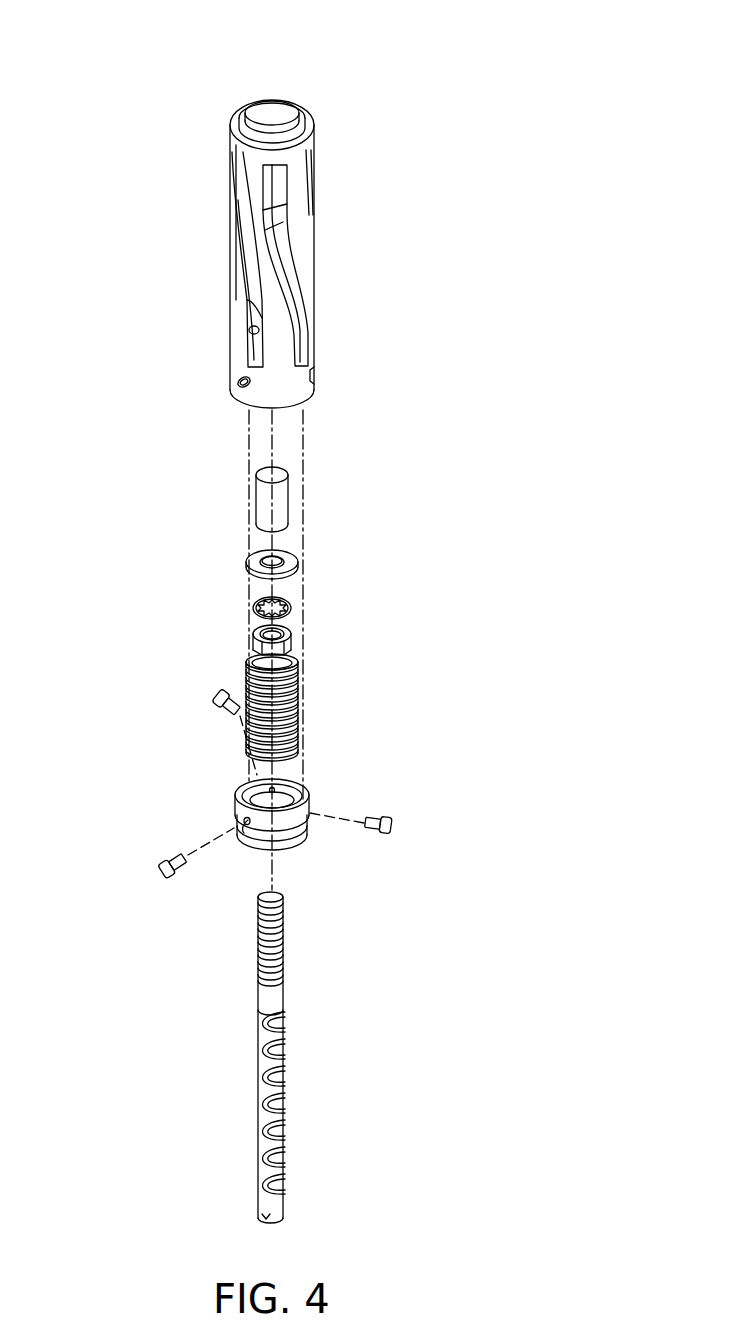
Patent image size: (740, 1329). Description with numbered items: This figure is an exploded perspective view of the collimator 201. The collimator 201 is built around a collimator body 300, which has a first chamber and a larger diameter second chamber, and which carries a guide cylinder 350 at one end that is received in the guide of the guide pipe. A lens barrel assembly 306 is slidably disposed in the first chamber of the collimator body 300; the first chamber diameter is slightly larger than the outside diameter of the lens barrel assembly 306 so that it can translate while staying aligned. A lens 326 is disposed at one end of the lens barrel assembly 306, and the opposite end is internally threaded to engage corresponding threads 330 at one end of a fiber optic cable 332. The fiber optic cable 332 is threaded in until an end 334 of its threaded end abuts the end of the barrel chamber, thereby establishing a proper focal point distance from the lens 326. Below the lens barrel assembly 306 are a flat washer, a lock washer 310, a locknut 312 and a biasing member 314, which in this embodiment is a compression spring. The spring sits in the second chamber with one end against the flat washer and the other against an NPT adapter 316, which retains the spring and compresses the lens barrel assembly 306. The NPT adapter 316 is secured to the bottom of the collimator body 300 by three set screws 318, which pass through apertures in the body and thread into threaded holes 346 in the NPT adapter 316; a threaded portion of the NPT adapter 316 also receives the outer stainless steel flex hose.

The collimator 201 is at (316, 79).
The collimator body 300 is at (314, 290).
The guide cylinder 350 is at (300, 123).
The lens 326 is at (256, 479).
The lens barrel assembly 306 is at (289, 483).
The lock washer 310 is at (292, 609).
The locknut 312 is at (292, 647).
The biasing member 314 is at (248, 662).
The NPT adapter 316 is at (236, 797).
The threaded holes 346 is at (247, 826).
The set screws 318 is at (166, 870).
The end of the threaded end of the cable 334 is at (284, 896).
The threads 330 is at (284, 950).
The fiber optic cable 332 is at (284, 1080).